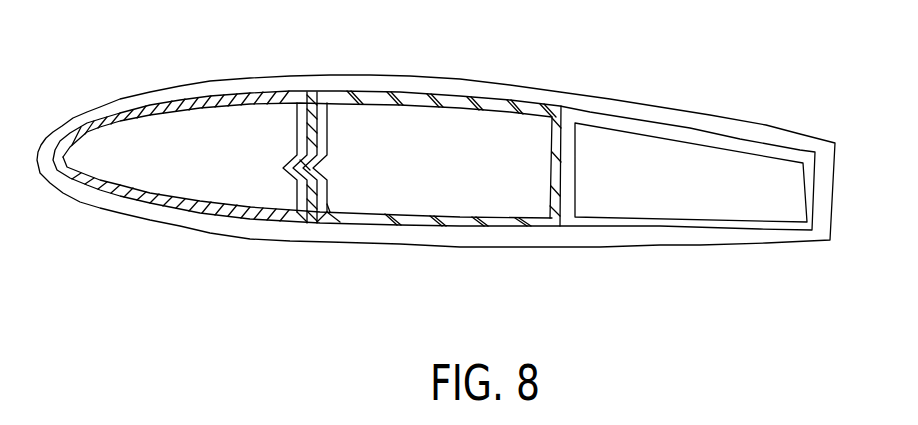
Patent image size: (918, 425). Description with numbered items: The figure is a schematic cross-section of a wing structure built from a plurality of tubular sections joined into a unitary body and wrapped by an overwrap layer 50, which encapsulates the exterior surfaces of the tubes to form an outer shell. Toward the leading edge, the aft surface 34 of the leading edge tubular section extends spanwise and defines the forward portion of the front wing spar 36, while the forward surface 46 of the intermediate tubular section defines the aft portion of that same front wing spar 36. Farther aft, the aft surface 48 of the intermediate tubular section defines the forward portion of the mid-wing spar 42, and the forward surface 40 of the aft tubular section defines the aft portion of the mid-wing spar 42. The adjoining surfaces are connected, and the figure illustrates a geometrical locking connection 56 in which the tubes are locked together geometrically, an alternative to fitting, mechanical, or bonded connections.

The overwrap layer 50 is at (753, 96).
The geometrical locking connection 56 is at (283, 134).
The aft surface 34 is at (278, 205).
The front wing spar 36 is at (313, 74).
The mid-wing spar 42 is at (567, 97).
The forward surface 46 is at (341, 209).
The aft surface 48 is at (521, 213).
The forward surface 40 is at (593, 210).